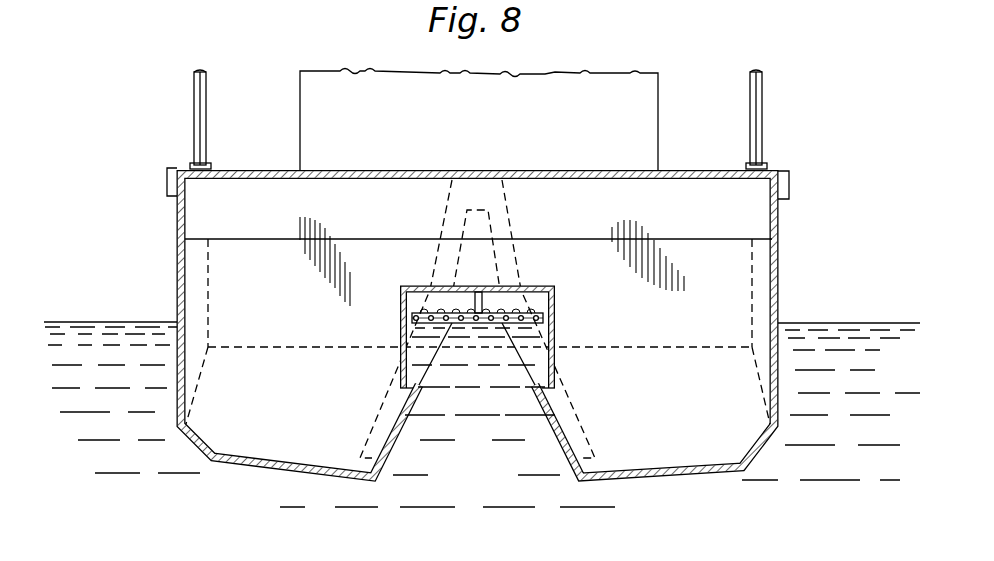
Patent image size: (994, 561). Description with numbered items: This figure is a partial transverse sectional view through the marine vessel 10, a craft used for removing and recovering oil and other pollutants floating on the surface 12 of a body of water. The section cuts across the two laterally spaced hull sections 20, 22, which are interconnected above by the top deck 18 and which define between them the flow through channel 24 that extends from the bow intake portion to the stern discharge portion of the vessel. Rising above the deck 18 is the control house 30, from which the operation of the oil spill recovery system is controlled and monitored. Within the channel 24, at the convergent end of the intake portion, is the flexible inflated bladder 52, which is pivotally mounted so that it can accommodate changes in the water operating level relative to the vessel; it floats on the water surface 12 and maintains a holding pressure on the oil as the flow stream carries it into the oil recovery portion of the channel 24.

The marine vessel 10 is at (166, 114).
The surface of a body of water 12 is at (833, 322).
The top deck 18 is at (716, 177).
The hull section 20 is at (243, 467).
The hull section 22 is at (675, 478).
The flow through channel 24 is at (489, 470).
The control house 30 is at (640, 108).
The flexible inflated bladder 52 is at (518, 313).